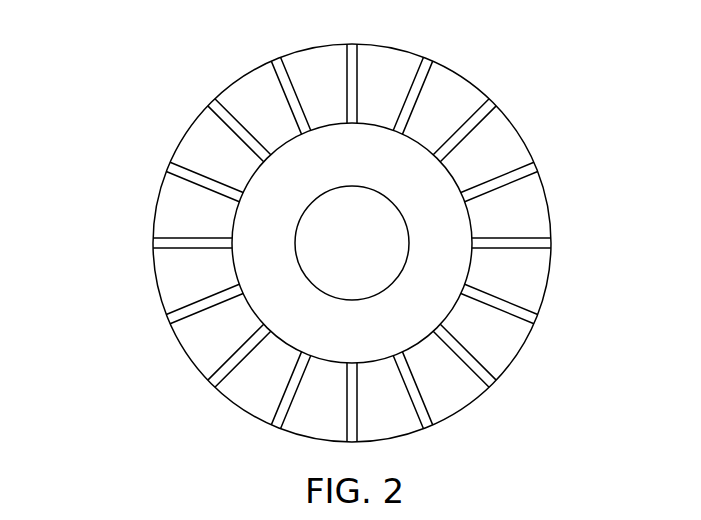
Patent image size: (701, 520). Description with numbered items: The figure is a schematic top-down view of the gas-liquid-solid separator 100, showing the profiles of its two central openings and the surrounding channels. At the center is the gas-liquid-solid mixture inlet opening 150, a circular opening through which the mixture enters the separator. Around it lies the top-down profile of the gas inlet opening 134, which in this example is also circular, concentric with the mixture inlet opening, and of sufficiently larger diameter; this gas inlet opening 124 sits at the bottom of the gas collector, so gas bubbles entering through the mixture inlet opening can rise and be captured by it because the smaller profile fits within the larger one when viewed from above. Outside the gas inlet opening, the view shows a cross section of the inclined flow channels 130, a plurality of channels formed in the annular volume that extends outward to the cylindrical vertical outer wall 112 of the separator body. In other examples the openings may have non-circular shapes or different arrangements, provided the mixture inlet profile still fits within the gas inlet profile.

The gas-liquid-solid separator 100 is at (186, 37).
The vertical outer wall 112 is at (553, 273).
The gas inlet opening 124 is at (472, 223).
The inclined flow channels 130 is at (502, 345).
The gas inlet opening 134 is at (200, 348).
The gas-liquid-solid mixture inlet opening 150 is at (400, 208).